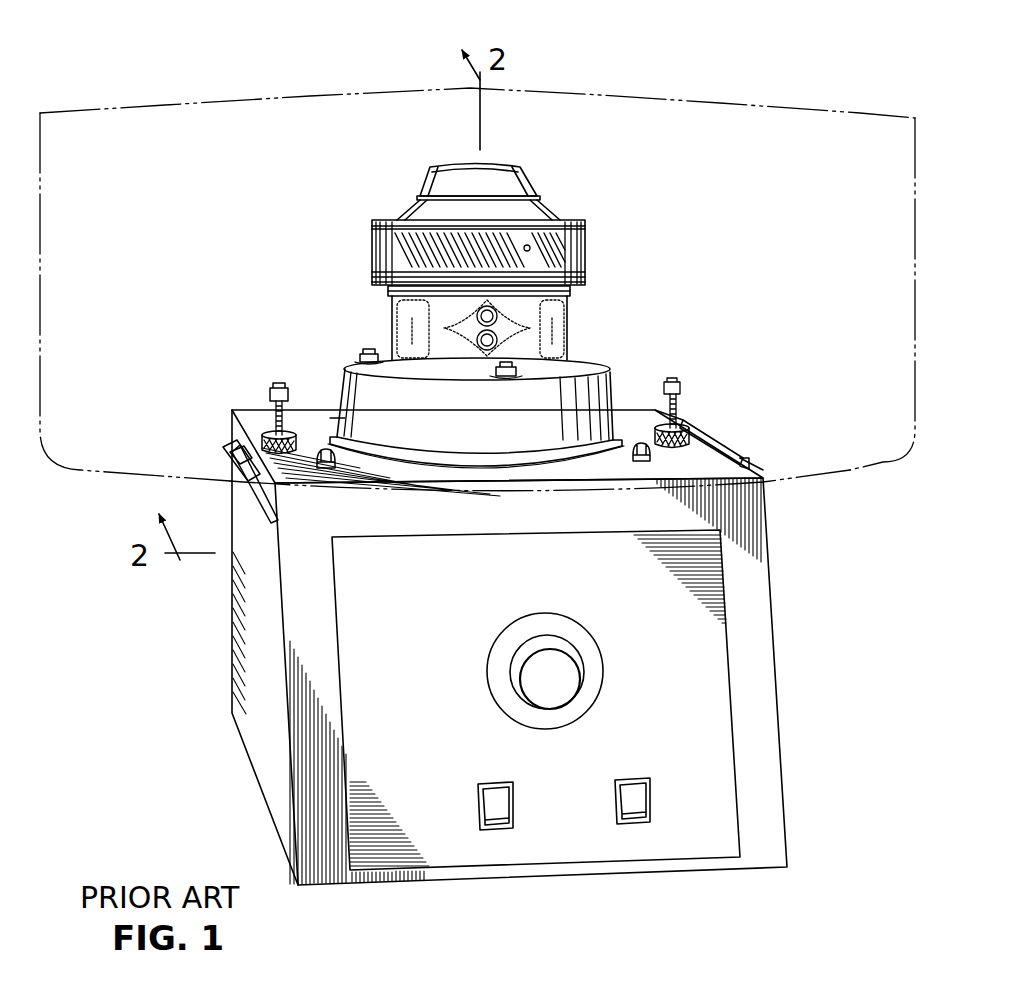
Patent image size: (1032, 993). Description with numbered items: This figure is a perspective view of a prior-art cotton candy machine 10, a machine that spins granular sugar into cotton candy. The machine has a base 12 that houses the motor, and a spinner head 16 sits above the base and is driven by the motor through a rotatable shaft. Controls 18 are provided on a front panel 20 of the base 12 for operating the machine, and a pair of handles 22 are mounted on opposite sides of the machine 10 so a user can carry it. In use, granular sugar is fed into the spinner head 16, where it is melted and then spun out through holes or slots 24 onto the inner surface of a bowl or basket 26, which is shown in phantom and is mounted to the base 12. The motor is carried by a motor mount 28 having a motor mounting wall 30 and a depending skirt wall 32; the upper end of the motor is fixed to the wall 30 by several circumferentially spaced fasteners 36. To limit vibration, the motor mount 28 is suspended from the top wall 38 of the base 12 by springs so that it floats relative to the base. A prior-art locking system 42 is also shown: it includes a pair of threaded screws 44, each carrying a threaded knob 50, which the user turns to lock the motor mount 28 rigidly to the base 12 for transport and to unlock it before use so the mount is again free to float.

The cotton candy machine 10 is at (834, 54).
The base 12 is at (782, 697).
The spinner head 16 is at (558, 203).
The controls 18 is at (497, 785).
The front panel 20 is at (666, 706).
The handles 22 is at (226, 463).
The holes or slots 24 is at (585, 250).
The bowl or basket 26 is at (850, 472).
The motor mount 28 is at (616, 382).
The motor mounting wall 30 is at (583, 366).
The depending skirt wall 32 is at (350, 403).
The fasteners 36 is at (368, 356).
The top wall 38 is at (330, 418).
The locking system 42 is at (250, 360).
The threaded screws 44 is at (262, 421).
The threaded knob 50 is at (330, 460).